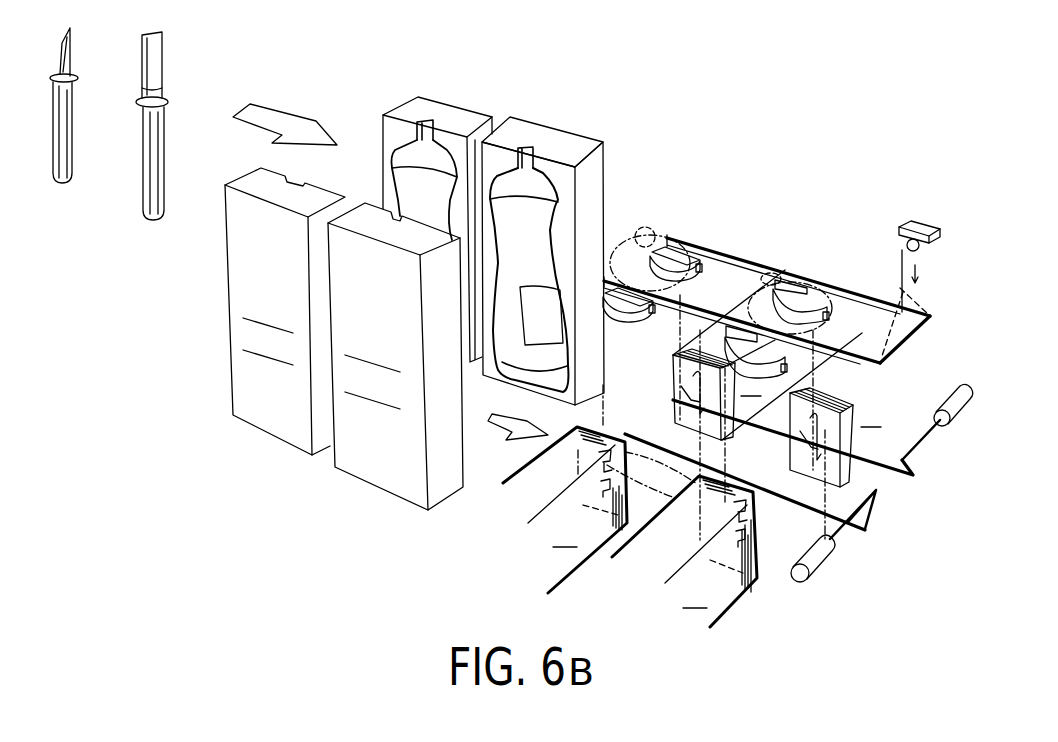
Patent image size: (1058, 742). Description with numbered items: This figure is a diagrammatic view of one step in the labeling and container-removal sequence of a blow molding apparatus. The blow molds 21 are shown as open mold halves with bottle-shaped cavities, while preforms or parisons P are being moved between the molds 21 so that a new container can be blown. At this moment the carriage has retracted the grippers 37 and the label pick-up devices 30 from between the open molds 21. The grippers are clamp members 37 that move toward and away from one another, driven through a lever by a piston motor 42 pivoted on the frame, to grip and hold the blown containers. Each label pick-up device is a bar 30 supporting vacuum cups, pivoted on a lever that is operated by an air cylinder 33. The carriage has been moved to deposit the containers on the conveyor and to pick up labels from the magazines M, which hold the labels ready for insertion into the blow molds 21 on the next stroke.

The blow molds 21 is at (357, 435).
The bar 30 is at (678, 406).
The air cylinder 33 is at (952, 400).
The clamp members 37 is at (800, 278).
The piston motor 42 is at (906, 243).
The parison P is at (60, 186).
The magazines M is at (692, 488).